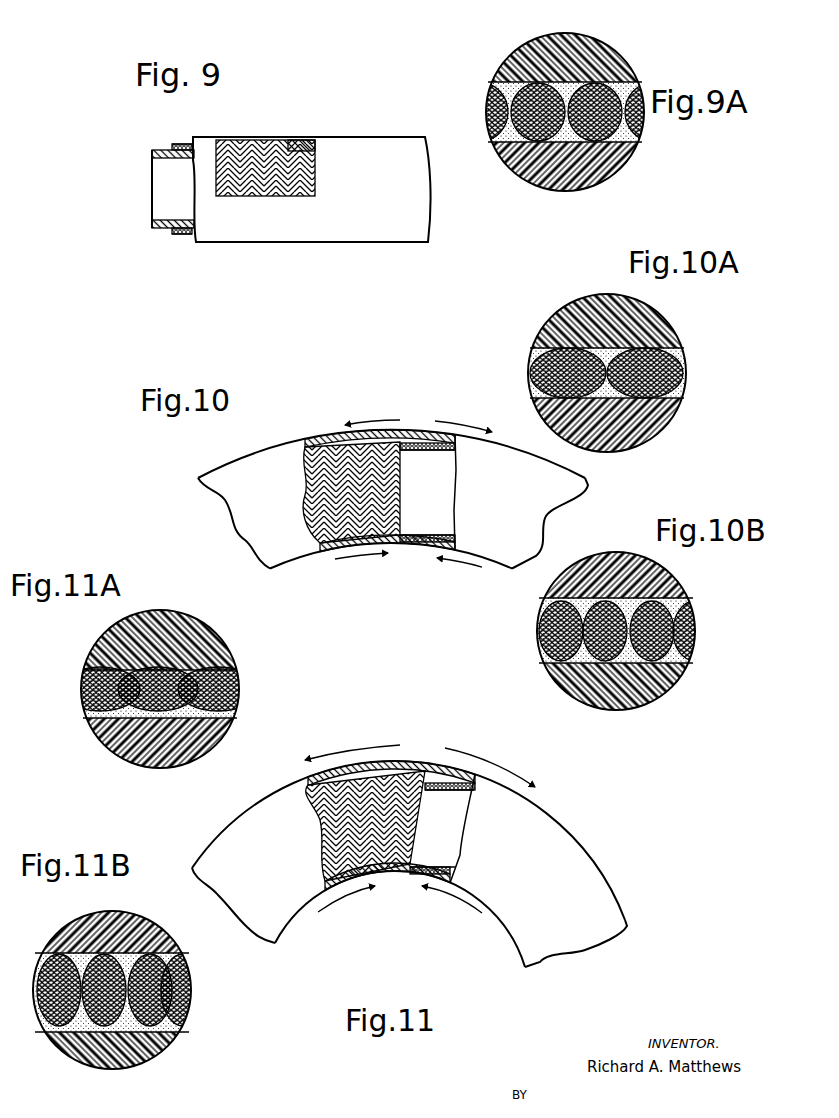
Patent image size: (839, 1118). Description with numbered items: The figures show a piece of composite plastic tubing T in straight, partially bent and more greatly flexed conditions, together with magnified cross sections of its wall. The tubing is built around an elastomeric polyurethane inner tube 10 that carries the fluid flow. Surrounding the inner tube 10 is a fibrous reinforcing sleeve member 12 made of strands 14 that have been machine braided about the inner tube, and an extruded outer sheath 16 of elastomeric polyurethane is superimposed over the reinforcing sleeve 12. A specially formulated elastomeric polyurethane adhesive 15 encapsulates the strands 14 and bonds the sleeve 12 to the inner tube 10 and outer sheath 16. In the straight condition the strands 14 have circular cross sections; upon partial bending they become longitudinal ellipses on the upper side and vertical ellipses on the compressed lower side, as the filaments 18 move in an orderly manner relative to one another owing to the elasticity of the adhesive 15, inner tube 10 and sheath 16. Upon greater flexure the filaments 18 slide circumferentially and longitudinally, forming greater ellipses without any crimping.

In FIG. 9, the inner tube 10 is at (156, 225).
In FIG. 9A, the inner tube 10 is at (580, 192).
In FIG. 10A, the inner tube 10 is at (652, 430).
In FIG. 10, the inner tube 10 is at (452, 450).
In FIG. 11A, the inner tube 10 is at (125, 750).
In FIG. 10B, the inner tube 10 is at (632, 555).
In FIG. 11B, the inner tube 10 is at (95, 920).
In FIG. 11, the inner tube 10 is at (448, 870).
In FIG. 9, the fibrous reinforcing sleeve member 12 is at (178, 233).
In FIG. 9A, the fibrous reinforcing sleeve member 12 is at (643, 133).
In FIG. 10A, the fibrous reinforcing sleeve member 12 is at (684, 372).
In FIG. 10, the fibrous reinforcing sleeve member 12 is at (322, 440).
In FIG. 11A, the fibrous reinforcing sleeve member 12 is at (85, 701).
In FIG. 10B, the fibrous reinforcing sleeve member 12 is at (692, 630).
In FIG. 11B, the fibrous reinforcing sleeve member 12 is at (185, 1006).
In FIG. 11, the fibrous reinforcing sleeve member 12 is at (472, 786).
In FIG. 9A, the strands 14 is at (634, 143).
In FIG. 10A, the strands 14 is at (672, 346).
In FIG. 11A, the strands 14 is at (98, 712).
In FIG. 10B, the strands 14 is at (676, 606).
In FIG. 11B, the strands 14 is at (170, 957).
In FIG. 9, the elastomeric polyurethane adhesive 15 is at (176, 146).
In FIG. 9A, the elastomeric polyurethane adhesive 15 is at (541, 165).
In FIG. 10A, the elastomeric polyurethane adhesive 15 is at (618, 402).
In FIG. 10, the elastomeric polyurethane adhesive 15 is at (427, 492).
In FIG. 11A, the elastomeric polyurethane adhesive 15 is at (147, 720).
In FIG. 10B, the elastomeric polyurethane adhesive 15 is at (590, 597).
In FIG. 11B, the elastomeric polyurethane adhesive 15 is at (70, 1040).
In FIG. 11, the elastomeric polyurethane adhesive 15 is at (442, 828).
In FIG. 9, the outer sheath 16 is at (218, 238).
In FIG. 9A, the outer sheath 16 is at (574, 38).
In FIG. 10A, the outer sheath 16 is at (648, 320).
In FIG. 10, the outer sheath 16 is at (398, 550).
In FIG. 11A, the outer sheath 16 is at (110, 640).
In FIG. 10B, the outer sheath 16 is at (672, 681).
In FIG. 11B, the outer sheath 16 is at (155, 1050).
In FIG. 11, the outer sheath 16 is at (506, 932).
In FIG. 9A, the filaments 18 is at (632, 86).
In FIG. 10A, the filaments 18 is at (544, 361).
In FIG. 11A, the filaments 18 is at (156, 668).
In FIG. 10B, the filaments 18 is at (618, 666).
In FIG. 9, the composite tubing T is at (369, 244).
In FIG. 10, the composite tubing T is at (251, 453).
In FIG. 11, the composite tubing T is at (558, 818).